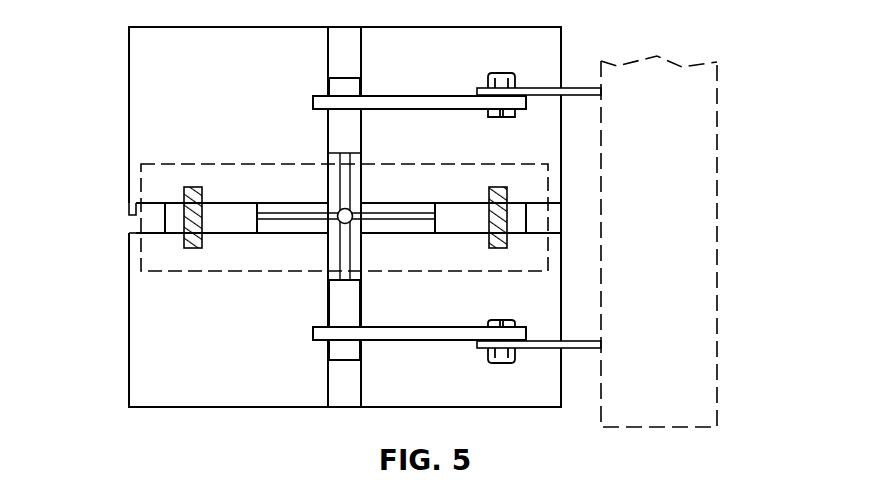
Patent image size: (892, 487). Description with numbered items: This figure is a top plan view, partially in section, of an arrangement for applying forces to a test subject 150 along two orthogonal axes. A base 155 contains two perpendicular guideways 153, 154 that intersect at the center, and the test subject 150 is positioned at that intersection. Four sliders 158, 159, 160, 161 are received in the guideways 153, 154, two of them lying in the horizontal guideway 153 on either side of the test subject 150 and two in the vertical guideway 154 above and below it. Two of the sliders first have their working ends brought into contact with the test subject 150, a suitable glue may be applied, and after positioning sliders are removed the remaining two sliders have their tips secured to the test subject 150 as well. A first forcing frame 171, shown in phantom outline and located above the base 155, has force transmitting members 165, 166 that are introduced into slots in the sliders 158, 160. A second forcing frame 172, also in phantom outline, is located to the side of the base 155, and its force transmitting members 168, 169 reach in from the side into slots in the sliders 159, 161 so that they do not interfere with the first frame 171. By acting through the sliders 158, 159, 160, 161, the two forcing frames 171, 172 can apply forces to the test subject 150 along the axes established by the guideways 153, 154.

The test subject 150 is at (351, 212).
The guideway 153 is at (131, 214).
The guideway 154 is at (354, 54).
The base 155 is at (120, 55).
The slider 158 is at (232, 229).
The slider 159 is at (358, 90).
The slider 160 is at (516, 202).
The slider 161 is at (330, 304).
The force transmitting member 165 is at (195, 188).
The force transmitting member 166 is at (497, 250).
The force transmitting member 168 is at (318, 101).
The force transmitting member 169 is at (397, 333).
The first forcing frame 171 is at (257, 264).
The second forcing frame 172 is at (703, 150).